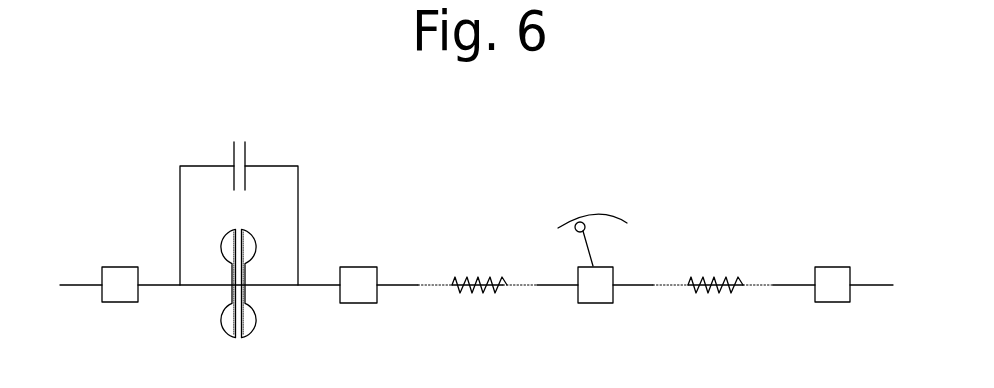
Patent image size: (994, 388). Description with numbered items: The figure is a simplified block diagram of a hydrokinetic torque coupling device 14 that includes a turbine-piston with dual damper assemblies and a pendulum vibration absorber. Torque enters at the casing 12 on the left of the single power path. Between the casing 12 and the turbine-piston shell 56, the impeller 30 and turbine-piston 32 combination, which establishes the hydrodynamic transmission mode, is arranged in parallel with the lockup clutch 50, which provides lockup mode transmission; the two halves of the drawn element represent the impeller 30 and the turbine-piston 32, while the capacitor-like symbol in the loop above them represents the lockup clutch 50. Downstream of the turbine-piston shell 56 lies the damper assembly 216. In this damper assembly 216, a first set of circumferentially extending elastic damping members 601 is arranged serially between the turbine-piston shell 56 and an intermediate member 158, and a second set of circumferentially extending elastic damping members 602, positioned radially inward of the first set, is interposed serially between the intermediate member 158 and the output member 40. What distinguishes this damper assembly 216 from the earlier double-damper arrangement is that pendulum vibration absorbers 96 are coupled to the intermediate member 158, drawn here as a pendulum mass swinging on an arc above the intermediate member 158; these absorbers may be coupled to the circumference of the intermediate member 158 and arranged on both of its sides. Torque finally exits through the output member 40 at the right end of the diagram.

The casing 12 is at (121, 273).
The hydrokinetic torque coupling device 14 is at (211, 262).
The impeller 30 is at (222, 321).
The turbine-piston 32 is at (255, 321).
The lockup clutch 50 is at (258, 149).
The turbine-piston shell 56 is at (362, 272).
The first set of elastic damping members 601 is at (472, 296).
The second set of elastic damping members 602 is at (710, 296).
The pendulum vibration absorbers 96 is at (609, 217).
The intermediate member 158 is at (593, 297).
The damper assembly 216 is at (658, 259).
The output member 40 is at (835, 270).